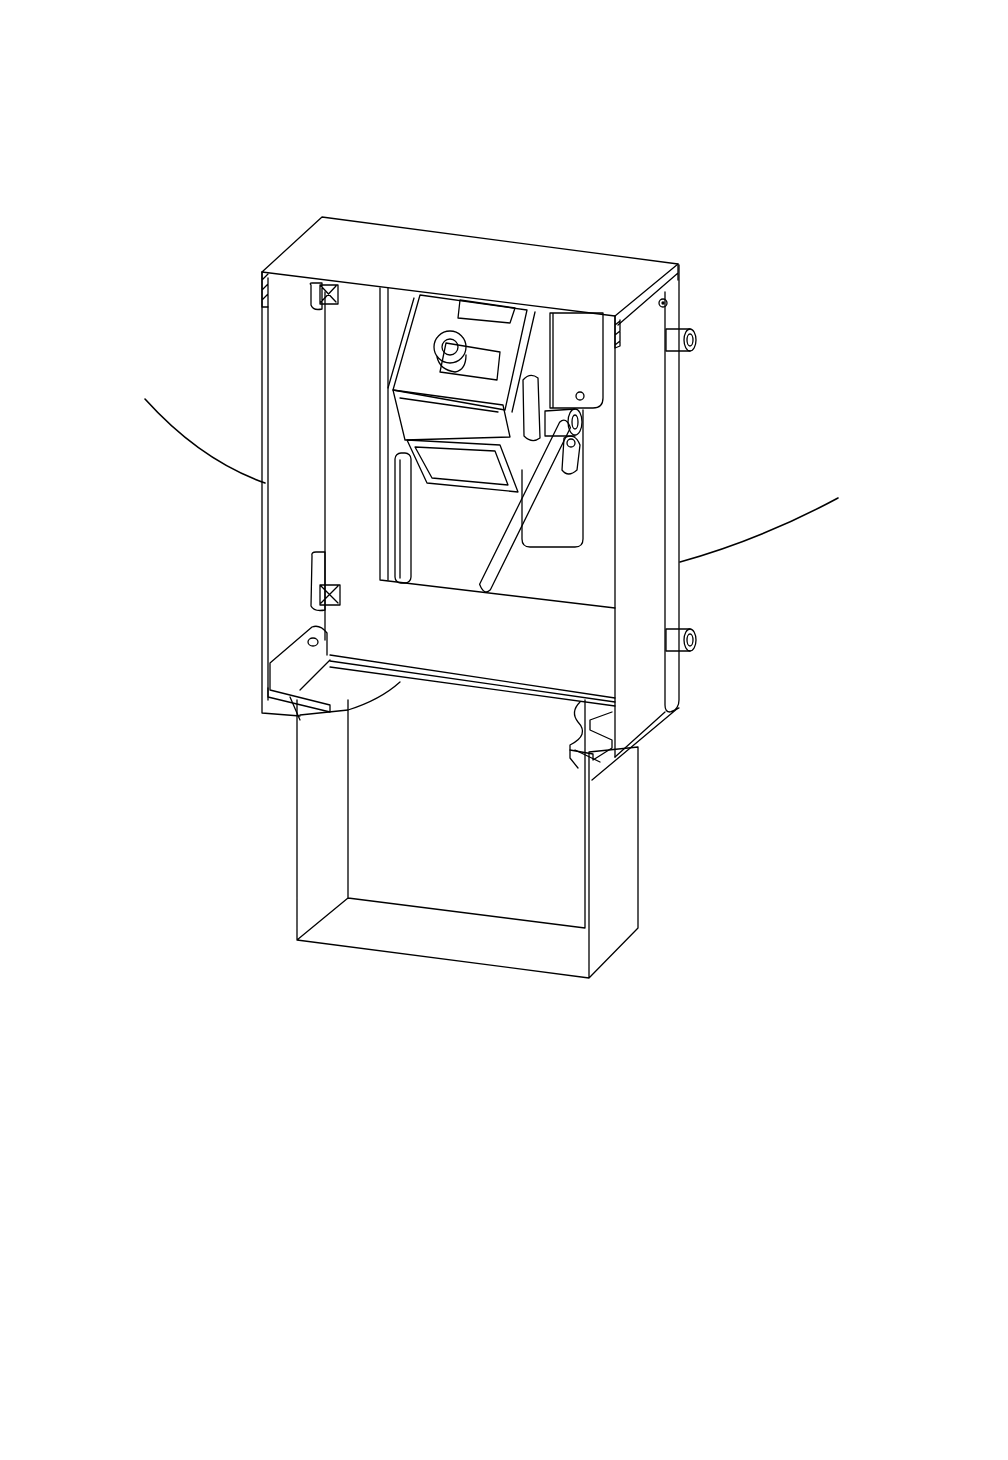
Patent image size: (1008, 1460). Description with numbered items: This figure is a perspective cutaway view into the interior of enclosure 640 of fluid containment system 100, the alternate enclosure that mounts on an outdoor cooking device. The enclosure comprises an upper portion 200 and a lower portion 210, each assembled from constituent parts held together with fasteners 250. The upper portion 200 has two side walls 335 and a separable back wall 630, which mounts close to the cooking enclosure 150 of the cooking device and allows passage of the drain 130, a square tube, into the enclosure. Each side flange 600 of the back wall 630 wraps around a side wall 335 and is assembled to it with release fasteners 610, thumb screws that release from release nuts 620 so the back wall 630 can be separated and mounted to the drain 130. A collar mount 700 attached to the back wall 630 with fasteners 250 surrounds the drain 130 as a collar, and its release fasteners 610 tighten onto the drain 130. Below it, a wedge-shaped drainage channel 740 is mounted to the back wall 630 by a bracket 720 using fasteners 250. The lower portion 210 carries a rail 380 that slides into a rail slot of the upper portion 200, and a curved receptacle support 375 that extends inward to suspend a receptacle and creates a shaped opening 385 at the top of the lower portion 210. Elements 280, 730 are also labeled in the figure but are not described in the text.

The fluid containment system 100 is at (192, 48).
The drain 130 is at (483, 495).
The cooking enclosure 150 is at (758, 542).
The upper portion 200 is at (142, 333).
The lower portion 210 is at (648, 977).
The fasteners 250 is at (666, 302).
The top plate 280 is at (306, 230).
The side walls 335 is at (662, 720).
The receptacle support 375 is at (580, 755).
The rail 380 is at (293, 717).
The opening 385 is at (492, 664).
The side flange 600 is at (677, 388).
The release fasteners 610 is at (445, 340).
The release nuts 620 is at (340, 597).
The back wall 630 is at (681, 430).
The enclosure 640 is at (190, 118).
The collar mount 700 is at (527, 333).
The bracket 720 is at (533, 548).
The guide strip 730 is at (388, 332).
The drainage channel 740 is at (432, 590).